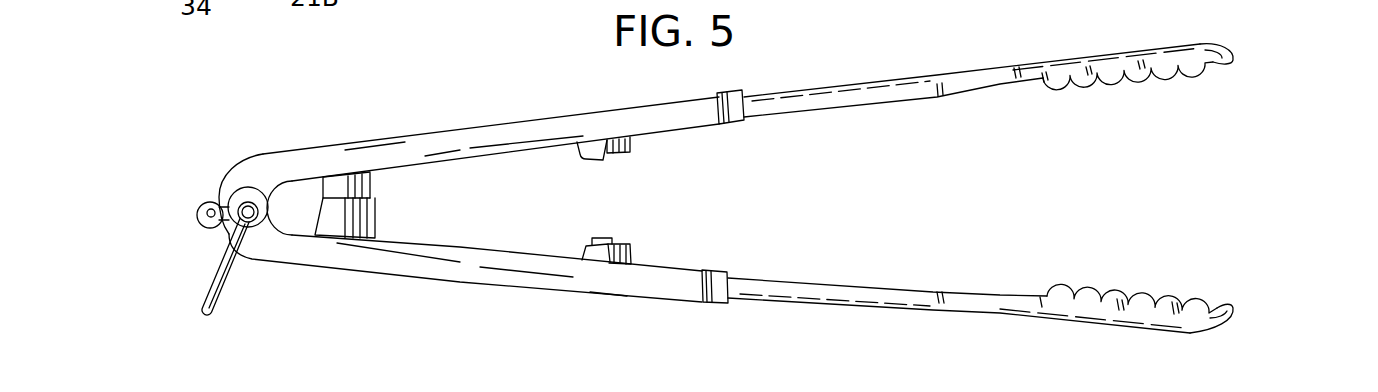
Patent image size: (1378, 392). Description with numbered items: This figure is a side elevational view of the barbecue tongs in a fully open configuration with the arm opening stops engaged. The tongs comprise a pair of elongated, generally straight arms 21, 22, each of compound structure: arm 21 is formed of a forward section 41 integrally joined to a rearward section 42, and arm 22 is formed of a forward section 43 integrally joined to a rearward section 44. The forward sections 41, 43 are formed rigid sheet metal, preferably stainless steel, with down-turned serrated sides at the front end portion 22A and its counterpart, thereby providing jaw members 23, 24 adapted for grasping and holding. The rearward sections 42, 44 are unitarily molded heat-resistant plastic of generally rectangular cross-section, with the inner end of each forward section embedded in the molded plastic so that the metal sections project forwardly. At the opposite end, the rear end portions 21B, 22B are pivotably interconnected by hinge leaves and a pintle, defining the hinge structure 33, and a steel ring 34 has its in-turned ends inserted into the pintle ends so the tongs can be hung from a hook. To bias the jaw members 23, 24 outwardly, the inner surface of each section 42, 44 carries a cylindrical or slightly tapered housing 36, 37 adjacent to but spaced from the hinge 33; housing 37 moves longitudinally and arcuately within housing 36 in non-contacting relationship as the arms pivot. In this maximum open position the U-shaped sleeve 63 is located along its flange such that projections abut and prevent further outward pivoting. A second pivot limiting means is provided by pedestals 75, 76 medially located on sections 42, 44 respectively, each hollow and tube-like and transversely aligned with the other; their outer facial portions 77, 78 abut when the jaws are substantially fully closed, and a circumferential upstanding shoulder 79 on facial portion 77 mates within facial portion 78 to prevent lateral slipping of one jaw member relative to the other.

The arm 21 is at (730, 298).
The rear end portion 21B is at (1230, 318).
The arm 22 is at (770, 93).
The front end portion 22A is at (1220, 43).
The rear end portion 22B is at (257, 157).
The jaw member 23 is at (1130, 328).
The jaw member 24 is at (1137, 47).
The hinge structure 33 is at (230, 180).
The ring 34 is at (203, 298).
The housing 36 is at (380, 222).
The housing 37 is at (370, 183).
The forward section 41 is at (932, 313).
The rearward section 42 is at (603, 293).
The forward section 43 is at (987, 67).
The rearward section 44 is at (510, 122).
The U-shaped sleeve 63 is at (195, 211).
The pedestal 75 is at (580, 257).
The pedestal 76 is at (632, 143).
The facial portion 77 is at (632, 255).
The facial portion 78 is at (603, 160).
The shoulder 79 is at (607, 212).